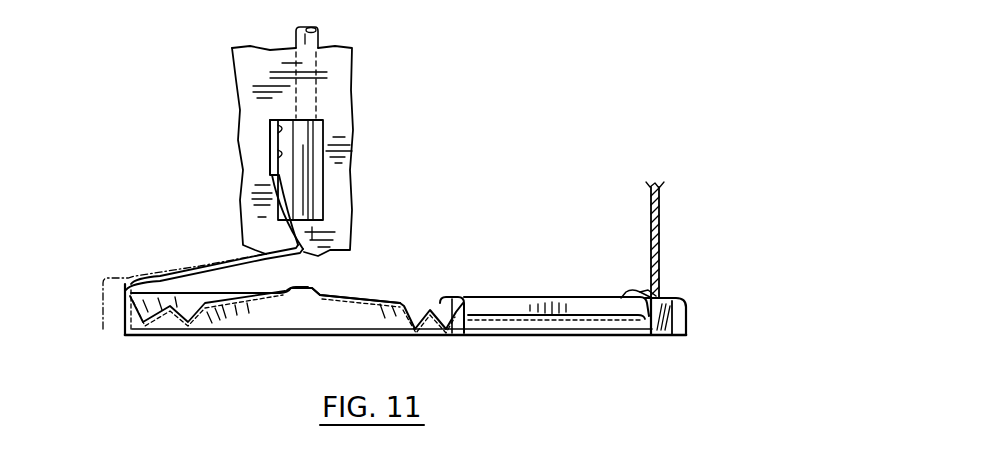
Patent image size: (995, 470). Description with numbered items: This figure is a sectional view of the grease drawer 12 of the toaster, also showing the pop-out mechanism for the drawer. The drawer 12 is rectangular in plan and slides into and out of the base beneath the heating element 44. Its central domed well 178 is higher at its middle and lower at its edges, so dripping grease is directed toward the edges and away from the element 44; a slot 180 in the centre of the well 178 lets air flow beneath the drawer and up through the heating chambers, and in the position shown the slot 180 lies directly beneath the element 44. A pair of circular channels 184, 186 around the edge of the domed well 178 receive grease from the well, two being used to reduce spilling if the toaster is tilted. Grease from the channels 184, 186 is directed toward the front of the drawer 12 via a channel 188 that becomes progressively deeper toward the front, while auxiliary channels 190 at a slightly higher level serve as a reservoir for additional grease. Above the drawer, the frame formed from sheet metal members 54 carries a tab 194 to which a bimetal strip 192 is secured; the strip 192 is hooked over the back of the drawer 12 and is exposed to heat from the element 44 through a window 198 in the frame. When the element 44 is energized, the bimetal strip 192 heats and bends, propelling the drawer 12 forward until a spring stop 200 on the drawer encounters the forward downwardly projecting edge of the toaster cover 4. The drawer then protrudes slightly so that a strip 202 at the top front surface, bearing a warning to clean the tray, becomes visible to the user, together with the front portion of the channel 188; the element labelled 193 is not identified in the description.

The exterior body casing 4 is at (660, 208).
The grease drawer 12 is at (688, 317).
The element 44 is at (381, 13).
The sheet metal member 54 is at (353, 72).
The central domed well 178 is at (378, 292).
The slot 180 is at (304, 286).
The circular channel 184 is at (417, 311).
The circular channel 186 is at (456, 313).
The channel 188 is at (613, 330).
The auxiliary channel 190 is at (566, 307).
The bimetal strip 192 is at (170, 273).
The inner wall 193 is at (652, 335).
The tab 194 is at (272, 140).
The window 198 is at (318, 193).
The spring stop 200 is at (648, 296).
The strip 202 is at (673, 298).